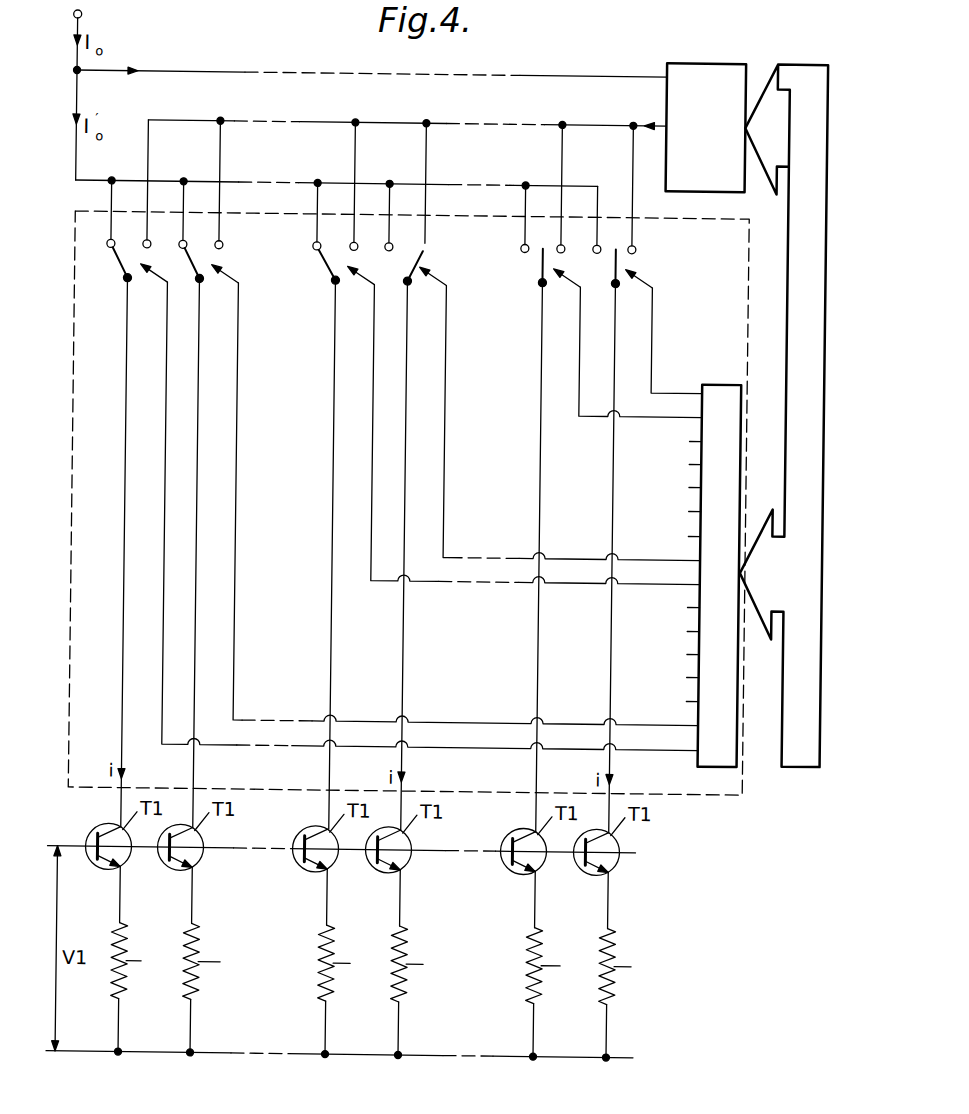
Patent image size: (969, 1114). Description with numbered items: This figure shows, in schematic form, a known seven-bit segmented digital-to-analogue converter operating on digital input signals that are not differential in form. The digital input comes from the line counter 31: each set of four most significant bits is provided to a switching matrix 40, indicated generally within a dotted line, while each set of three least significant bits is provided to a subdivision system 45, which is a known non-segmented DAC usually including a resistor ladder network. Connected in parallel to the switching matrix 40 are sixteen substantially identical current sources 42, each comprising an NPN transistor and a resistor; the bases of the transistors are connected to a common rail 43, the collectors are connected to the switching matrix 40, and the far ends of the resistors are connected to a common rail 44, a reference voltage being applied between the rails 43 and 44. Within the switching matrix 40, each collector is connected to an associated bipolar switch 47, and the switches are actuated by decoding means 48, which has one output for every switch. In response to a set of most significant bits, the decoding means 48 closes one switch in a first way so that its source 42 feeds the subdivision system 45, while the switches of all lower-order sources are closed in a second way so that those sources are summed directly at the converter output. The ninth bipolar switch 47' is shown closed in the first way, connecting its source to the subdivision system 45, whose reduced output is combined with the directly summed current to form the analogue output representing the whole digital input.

The line counter 31 is at (805, 763).
The switching matrix 40 is at (92, 773).
The current source 42 is at (226, 981).
The common rail 43 is at (155, 850).
The common rail 44 is at (105, 1050).
The subdivision system 45 is at (706, 127).
The bipolar switch 47 is at (368, 289).
The ninth bipolar switch 47' is at (458, 266).
The decoding means 48 is at (706, 760).